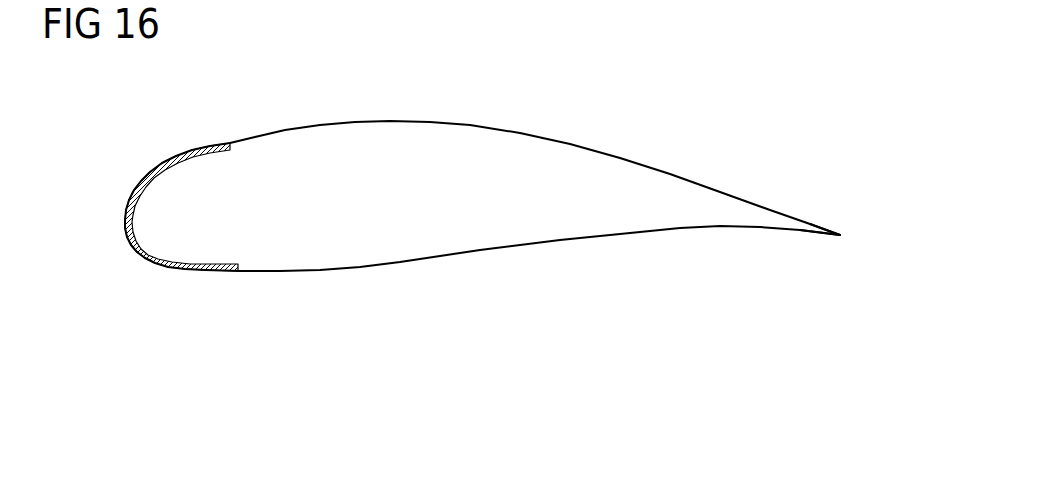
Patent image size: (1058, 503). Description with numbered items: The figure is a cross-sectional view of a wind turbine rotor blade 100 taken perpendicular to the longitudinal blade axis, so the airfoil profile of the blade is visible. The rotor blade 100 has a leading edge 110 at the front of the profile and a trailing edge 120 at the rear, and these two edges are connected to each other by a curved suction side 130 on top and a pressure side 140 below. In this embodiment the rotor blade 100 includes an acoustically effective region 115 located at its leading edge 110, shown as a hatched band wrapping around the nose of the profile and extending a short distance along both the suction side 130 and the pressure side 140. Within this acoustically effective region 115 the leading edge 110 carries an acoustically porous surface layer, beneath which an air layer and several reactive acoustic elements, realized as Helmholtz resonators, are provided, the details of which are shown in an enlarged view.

The wind turbine rotor blade 100 is at (272, 67).
The leading edge 110 is at (113, 277).
The acoustically effective region 115 is at (124, 208).
The trailing edge 120 is at (842, 235).
The suction side 130 is at (364, 120).
The pressure side 140 is at (320, 272).